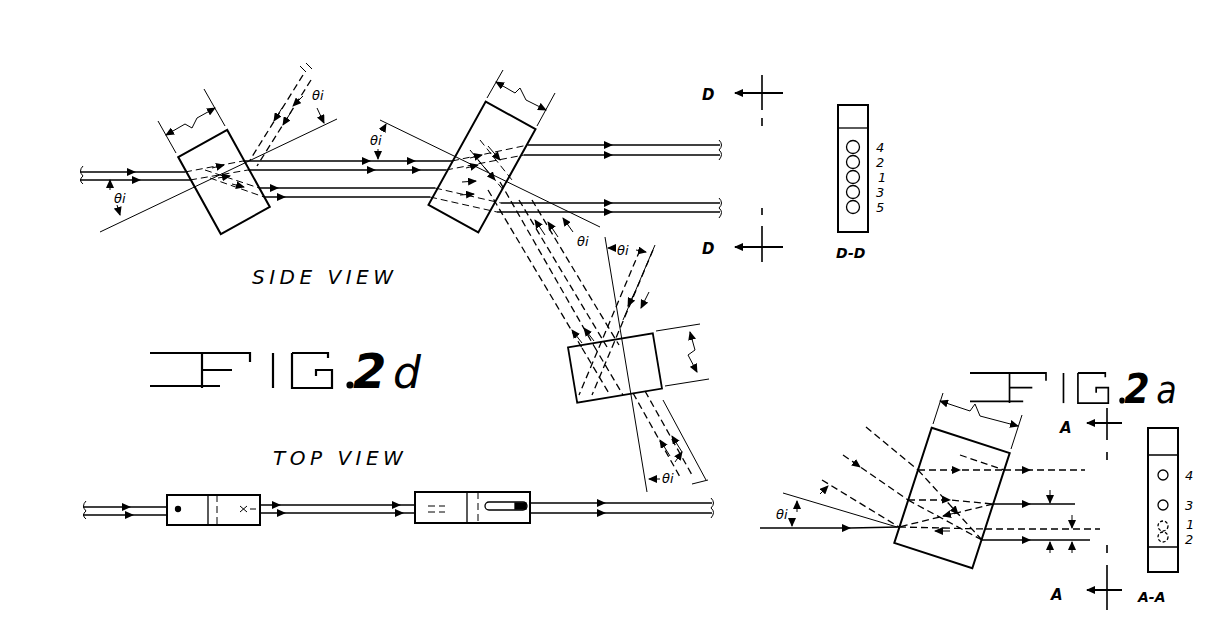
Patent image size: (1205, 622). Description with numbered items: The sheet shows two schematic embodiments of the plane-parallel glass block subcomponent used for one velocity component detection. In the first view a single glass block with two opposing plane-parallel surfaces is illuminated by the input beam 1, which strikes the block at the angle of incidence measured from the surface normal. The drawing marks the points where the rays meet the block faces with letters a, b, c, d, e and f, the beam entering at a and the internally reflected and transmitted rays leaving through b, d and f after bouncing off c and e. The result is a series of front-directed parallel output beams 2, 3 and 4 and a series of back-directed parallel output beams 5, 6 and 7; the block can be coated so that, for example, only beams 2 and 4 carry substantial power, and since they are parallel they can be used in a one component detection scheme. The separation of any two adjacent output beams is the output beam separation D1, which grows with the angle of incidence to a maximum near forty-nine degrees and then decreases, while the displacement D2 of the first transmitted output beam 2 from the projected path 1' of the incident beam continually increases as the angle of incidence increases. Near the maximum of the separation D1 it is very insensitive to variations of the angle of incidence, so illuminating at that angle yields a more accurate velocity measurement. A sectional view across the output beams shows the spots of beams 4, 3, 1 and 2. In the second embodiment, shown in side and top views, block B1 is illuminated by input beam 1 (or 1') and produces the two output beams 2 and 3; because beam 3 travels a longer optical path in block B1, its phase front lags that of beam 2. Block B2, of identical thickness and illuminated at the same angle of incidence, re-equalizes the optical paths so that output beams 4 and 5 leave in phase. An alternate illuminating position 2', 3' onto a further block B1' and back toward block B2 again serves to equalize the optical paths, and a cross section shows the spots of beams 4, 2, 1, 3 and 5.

In FIG. 2D, the input beam 1 is at (196, 291).
In FIG. 2A, the input beam 1 is at (823, 528).
In FIG. 2D, the first transmitted output beam 2 is at (347, 334).
In FIG. 2A, the first transmitted output beam 2 is at (1042, 542).
In FIG. 2D, the output beam 3 is at (347, 337).
In FIG. 2A, the output beam 3 is at (1046, 495).
In FIG. 2D, the output beam 4 is at (623, 320).
In FIG. 2A, the output beam 4 is at (1051, 471).
In FIG. 2D, the back directed output beam 5 is at (609, 199).
In FIG. 2A, the back directed output beam 5 is at (855, 497).
In FIG. 2A, the back directed output beam 6 is at (865, 468).
In FIG. 2A, the back directed output beam 7 is at (883, 441).
In FIG. 2A, the projected path of incident beam 1' is at (1058, 522).
In FIG. 2D, the alternate illuminating beam position 2' is at (590, 328).
In FIG. 2D, the alternate illuminating beam position 3' is at (569, 273).
In FIG. 2D, the glass block B1 is at (214, 307).
In FIG. 2D, the glass block B2 is at (442, 210).
In FIG. 2D, the beam splitter block B1' is at (618, 368).
In FIG. 2A, the entry point a on block face a is at (937, 517).
In FIG. 2A, the exit point b on block face b is at (953, 528).
In FIG. 2A, the point c on block face c is at (945, 504).
In FIG. 2A, the point d on block face d is at (962, 505).
In FIG. 2A, the point e on block face e is at (957, 450).
In FIG. 2A, the point f on block face f is at (991, 460).
In FIG. 2A, the output beam separation D1 is at (945, 524).
In FIG. 2A, the displacement of first transmitted output beam D2 is at (1074, 547).